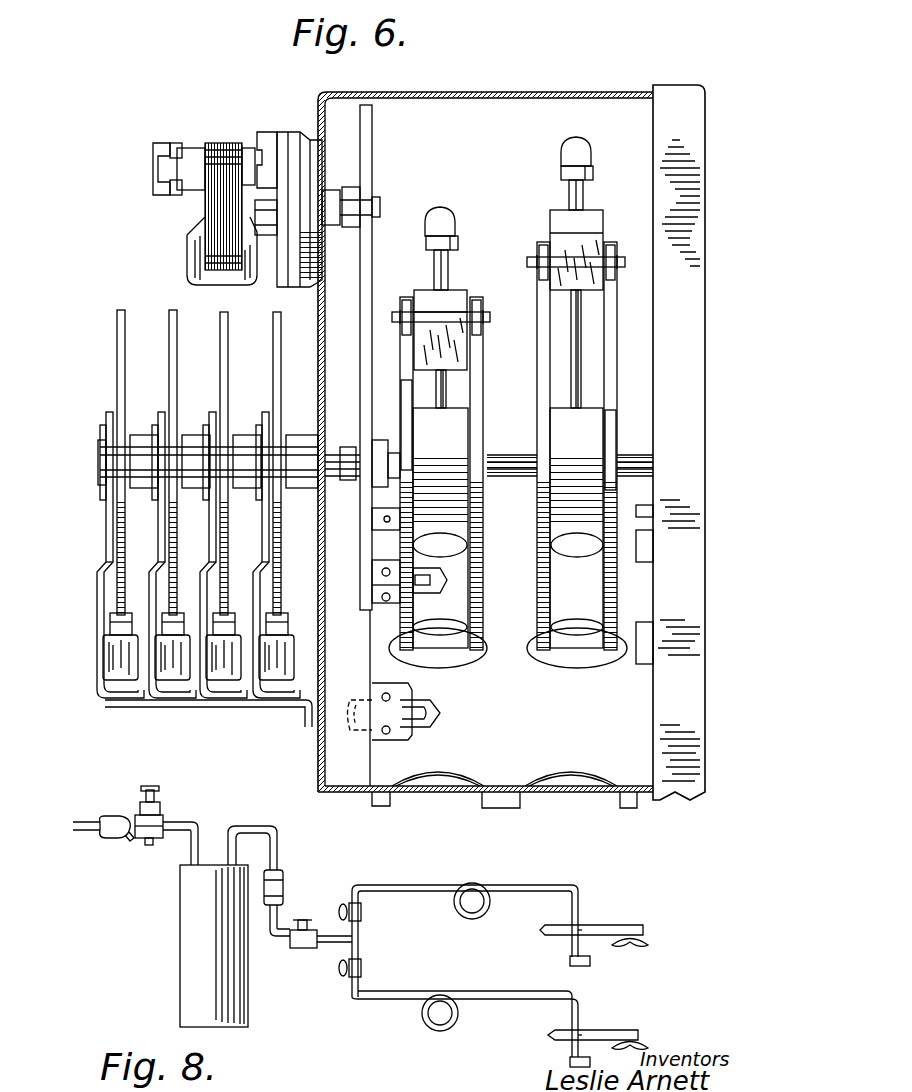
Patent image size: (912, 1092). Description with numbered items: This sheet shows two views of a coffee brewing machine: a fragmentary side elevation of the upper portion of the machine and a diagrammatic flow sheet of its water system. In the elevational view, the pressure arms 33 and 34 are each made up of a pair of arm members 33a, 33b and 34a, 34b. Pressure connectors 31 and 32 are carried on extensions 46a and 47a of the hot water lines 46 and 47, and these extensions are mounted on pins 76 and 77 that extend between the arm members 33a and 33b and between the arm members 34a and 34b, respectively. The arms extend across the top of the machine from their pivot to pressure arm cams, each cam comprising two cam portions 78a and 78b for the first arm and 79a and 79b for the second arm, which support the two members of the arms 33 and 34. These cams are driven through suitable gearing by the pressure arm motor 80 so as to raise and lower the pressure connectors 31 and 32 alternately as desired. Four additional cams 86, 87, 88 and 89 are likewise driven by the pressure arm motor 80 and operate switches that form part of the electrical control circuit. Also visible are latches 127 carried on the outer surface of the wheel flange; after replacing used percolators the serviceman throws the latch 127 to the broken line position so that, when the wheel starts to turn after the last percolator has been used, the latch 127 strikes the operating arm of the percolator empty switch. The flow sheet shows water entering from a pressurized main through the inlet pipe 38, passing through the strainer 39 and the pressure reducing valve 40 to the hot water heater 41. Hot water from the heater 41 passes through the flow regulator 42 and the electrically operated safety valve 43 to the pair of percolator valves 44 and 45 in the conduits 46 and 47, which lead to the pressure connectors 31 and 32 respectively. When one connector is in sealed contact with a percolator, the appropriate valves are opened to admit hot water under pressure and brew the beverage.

In FIG. 6, the pressure arm motor 80 is at (290, 148).
In FIG. 6, the cam 86 is at (117, 322).
In FIG. 6, the cam 87 is at (169, 320).
In FIG. 6, the cam 88 is at (220, 326).
In FIG. 6, the cam 89 is at (273, 326).
In FIG. 6, the arm member 33a is at (402, 312).
In FIG. 6, the arm member 33b is at (480, 310).
In FIG. 6, the arm member 34a is at (540, 247).
In FIG. 6, the arm member 34b is at (612, 245).
In FIG. 6, the pin 76 is at (491, 317).
In FIG. 6, the pin 77 is at (625, 262).
In FIG. 6, the cam portion 78a is at (403, 385).
In FIG. 6, the cam portion 78b is at (478, 424).
In FIG. 6, the cam portion 79a is at (542, 437).
In FIG. 6, the cam portion 79b is at (613, 427).
In FIG. 6, the extension of hot water line 46a is at (446, 392).
In FIG. 6, the extension of hot water line 47a is at (600, 365).
In FIG. 6, the latch 127 is at (432, 598).
In FIG. 8, the inlet pipe 38 is at (80, 822).
In FIG. 8, the strainer 39 is at (112, 820).
In FIG. 8, the pressure reducing valve 40 is at (152, 812).
In FIG. 8, the hot water heater 41 is at (197, 941).
In FIG. 8, the flow regulator 42 is at (283, 885).
In FIG. 8, the safety valve 43 is at (304, 918).
In FIG. 8, the percolator valve 44 is at (345, 903).
In FIG. 8, the percolator valve 45 is at (342, 972).
In FIG. 8, the conduit 46 is at (438, 886).
In FIG. 8, the conduit 47 is at (480, 996).
In FIG. 8, the pressure arm 33 is at (600, 925).
In FIG. 8, the pressure arm 34 is at (600, 1030).
In FIG. 8, the pressure connector 31 is at (592, 962).
In FIG. 8, the pressure connector 32 is at (570, 1062).